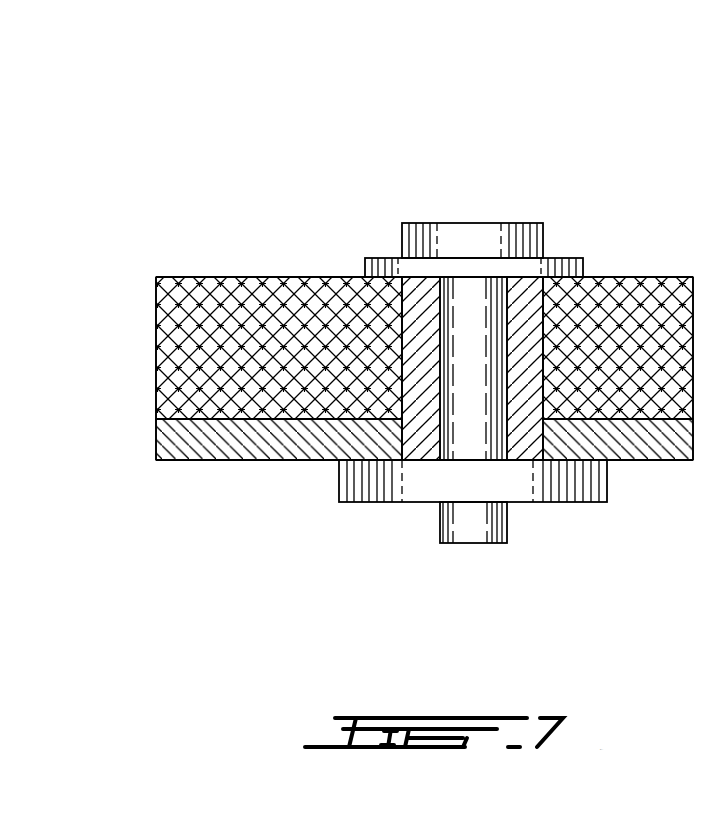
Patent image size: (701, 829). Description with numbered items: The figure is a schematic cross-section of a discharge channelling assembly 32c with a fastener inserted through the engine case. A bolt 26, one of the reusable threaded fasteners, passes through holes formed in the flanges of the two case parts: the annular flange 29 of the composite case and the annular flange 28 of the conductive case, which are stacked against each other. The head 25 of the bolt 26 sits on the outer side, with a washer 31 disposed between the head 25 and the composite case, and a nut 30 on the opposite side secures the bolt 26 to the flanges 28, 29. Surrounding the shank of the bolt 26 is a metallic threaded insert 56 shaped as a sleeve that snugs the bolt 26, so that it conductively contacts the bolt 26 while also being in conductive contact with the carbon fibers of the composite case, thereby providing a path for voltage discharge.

The discharge channelling assembly 32c is at (356, 345).
The annular flange of the composite case 29 is at (280, 274).
The annular flange of the conductive case 28 is at (247, 463).
The head of the bolt 25 is at (440, 223).
The bolt 26 is at (468, 205).
The washer 31 is at (570, 243).
The nut 30 is at (552, 502).
The metallic threaded insert 56 is at (424, 408).